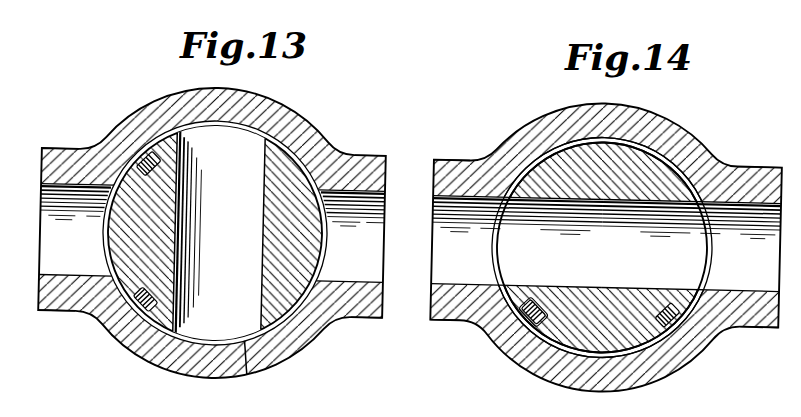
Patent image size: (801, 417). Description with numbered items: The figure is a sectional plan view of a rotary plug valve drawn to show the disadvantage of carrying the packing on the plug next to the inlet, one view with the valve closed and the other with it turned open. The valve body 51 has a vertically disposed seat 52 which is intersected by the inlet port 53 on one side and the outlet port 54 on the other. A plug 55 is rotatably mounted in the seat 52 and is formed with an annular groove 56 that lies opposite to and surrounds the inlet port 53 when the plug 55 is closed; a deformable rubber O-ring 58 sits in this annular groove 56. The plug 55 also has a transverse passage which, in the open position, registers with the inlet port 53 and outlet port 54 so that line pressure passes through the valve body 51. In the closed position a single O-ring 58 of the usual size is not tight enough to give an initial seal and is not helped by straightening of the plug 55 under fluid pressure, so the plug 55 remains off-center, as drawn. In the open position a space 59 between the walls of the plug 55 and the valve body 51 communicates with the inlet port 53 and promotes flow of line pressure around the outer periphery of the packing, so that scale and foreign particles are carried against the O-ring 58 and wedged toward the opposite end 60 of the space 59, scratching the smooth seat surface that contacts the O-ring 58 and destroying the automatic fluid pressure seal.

In FIG. 13, the valve body 51 is at (294, 85).
In FIG. 14, the valve body 51 is at (673, 93).
In FIG. 13, the seat 52 is at (253, 376).
In FIG. 13, the inlet port 53 is at (34, 282).
In FIG. 14, the inlet port 53 is at (428, 231).
In FIG. 13, the outlet port 54 is at (374, 263).
In FIG. 14, the outlet port 54 is at (724, 269).
In FIG. 13, the plug 55 is at (264, 172).
In FIG. 14, the plug 55 is at (637, 192).
In FIG. 13, the annular groove 56 is at (156, 310).
In FIG. 13, the O-ring 58 is at (145, 155).
In FIG. 14, the O-ring 58 is at (537, 313).
In FIG. 14, the space 59 is at (524, 303).
In FIG. 14, the opposite end of the space 60 is at (696, 211).